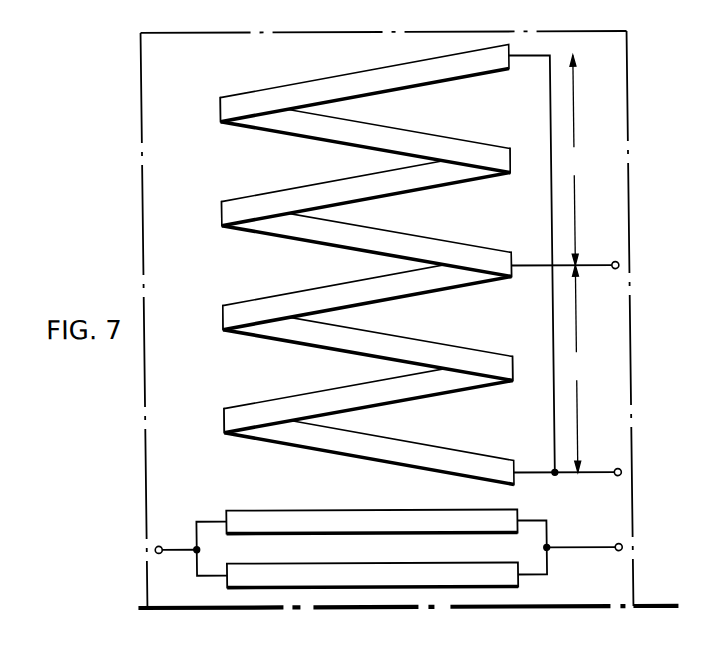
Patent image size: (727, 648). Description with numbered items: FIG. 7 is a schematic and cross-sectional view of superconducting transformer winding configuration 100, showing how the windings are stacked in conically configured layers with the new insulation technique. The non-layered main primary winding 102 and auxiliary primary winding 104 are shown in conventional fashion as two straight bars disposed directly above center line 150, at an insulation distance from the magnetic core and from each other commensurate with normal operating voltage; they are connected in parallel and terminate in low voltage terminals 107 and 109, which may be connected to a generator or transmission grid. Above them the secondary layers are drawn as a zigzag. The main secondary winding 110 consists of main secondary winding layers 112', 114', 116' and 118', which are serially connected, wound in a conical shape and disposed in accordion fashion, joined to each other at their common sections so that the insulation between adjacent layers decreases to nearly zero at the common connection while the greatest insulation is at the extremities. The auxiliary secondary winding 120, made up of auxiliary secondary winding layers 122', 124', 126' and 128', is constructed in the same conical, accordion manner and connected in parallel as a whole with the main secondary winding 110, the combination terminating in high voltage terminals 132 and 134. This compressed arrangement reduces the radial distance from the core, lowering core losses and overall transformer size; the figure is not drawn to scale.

The superconducting transformer winding design 100 is at (367, 264).
The main primary winding 102 is at (337, 520).
The auxiliary primary winding 104 is at (340, 572).
The low voltage terminal 107 is at (616, 544).
The low voltage terminal 109 is at (157, 545).
The main secondary winding 110 is at (591, 377).
The main secondary winding layer 112' is at (369, 446).
The main secondary winding layer 114' is at (368, 394).
The main secondary winding layer 116' is at (368, 342).
The main secondary winding layer 118' is at (367, 290).
The auxiliary secondary winding 120 is at (591, 172).
The auxiliary secondary winding layer 122' is at (367, 238).
The auxiliary secondary winding layer 124' is at (366, 186).
The auxiliary secondary winding layer 126' is at (365, 134).
The auxiliary secondary winding layer 128' is at (365, 82).
The high voltage terminal 132 is at (616, 262).
The high voltage terminal 134 is at (616, 469).
The center line 150 is at (567, 603).